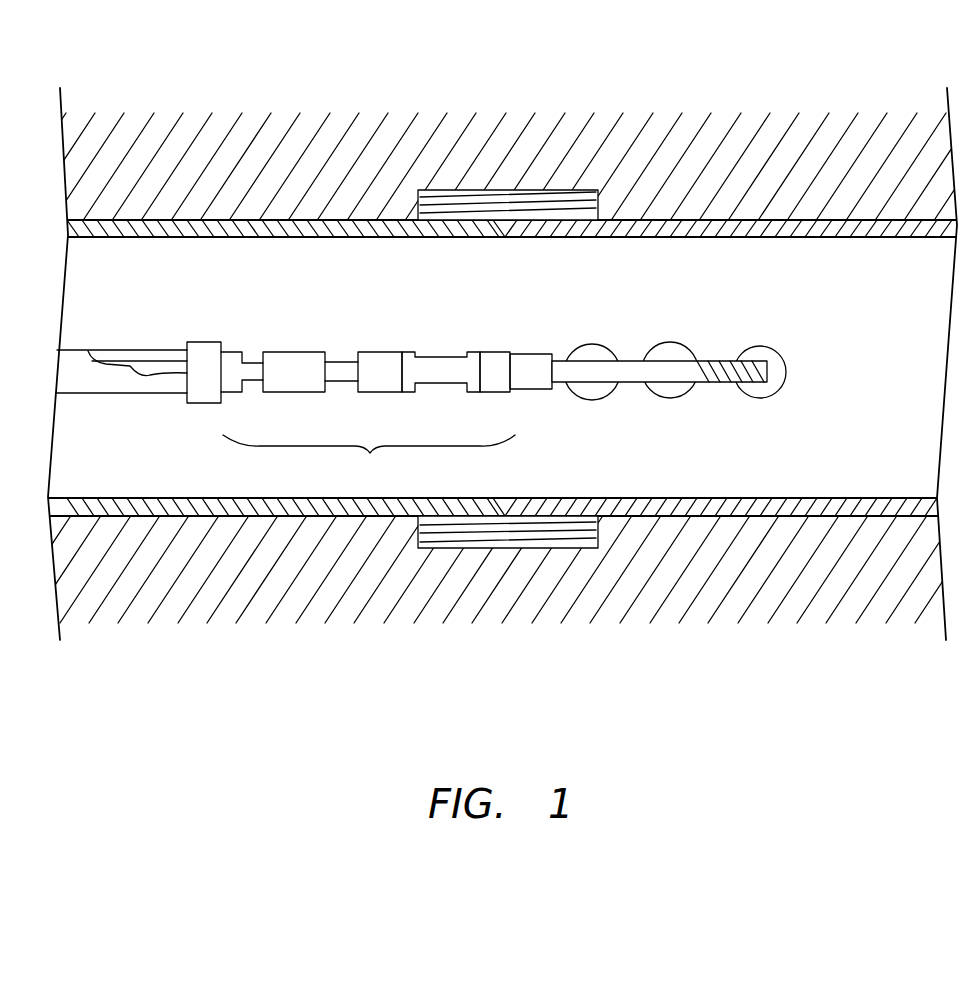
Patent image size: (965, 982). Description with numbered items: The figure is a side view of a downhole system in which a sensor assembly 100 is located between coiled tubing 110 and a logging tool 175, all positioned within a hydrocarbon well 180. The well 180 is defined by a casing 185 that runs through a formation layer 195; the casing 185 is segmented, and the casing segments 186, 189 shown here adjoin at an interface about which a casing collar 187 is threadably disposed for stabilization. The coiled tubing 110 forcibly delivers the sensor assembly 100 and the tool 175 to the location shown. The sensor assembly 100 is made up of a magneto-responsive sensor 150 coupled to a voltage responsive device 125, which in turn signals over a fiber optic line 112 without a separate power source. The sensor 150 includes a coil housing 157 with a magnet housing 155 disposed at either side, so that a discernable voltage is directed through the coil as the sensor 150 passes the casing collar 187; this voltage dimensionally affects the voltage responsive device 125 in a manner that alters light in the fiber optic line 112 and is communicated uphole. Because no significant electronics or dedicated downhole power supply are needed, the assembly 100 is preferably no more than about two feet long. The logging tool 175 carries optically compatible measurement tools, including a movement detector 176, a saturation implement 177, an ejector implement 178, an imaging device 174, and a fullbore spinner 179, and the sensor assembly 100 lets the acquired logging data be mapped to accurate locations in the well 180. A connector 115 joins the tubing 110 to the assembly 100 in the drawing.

The sensor assembly 100 is at (369, 463).
The coiled tubing 110 is at (117, 388).
The fiber optic line 112 is at (147, 357).
The cable head 115 is at (205, 342).
The voltage responsive device 125 is at (304, 318).
The magneto-responsive sensor 150 is at (458, 318).
The magnet housing 155 is at (380, 360).
The coil housing 157 is at (433, 365).
The imaging device 174 is at (668, 392).
The logging tool 175 is at (661, 304).
The movement detector 176 is at (540, 356).
The saturation implement 177 is at (583, 392).
The ejector implement 178 is at (733, 392).
The fullbore spinner 179 is at (778, 363).
The hydrocarbon well 180 is at (180, 276).
The casing 185 is at (770, 247).
The casing segment 186 is at (856, 497).
The casing collar 187 is at (510, 212).
The casing segment 189 is at (142, 498).
The formation layer 195 is at (227, 170).